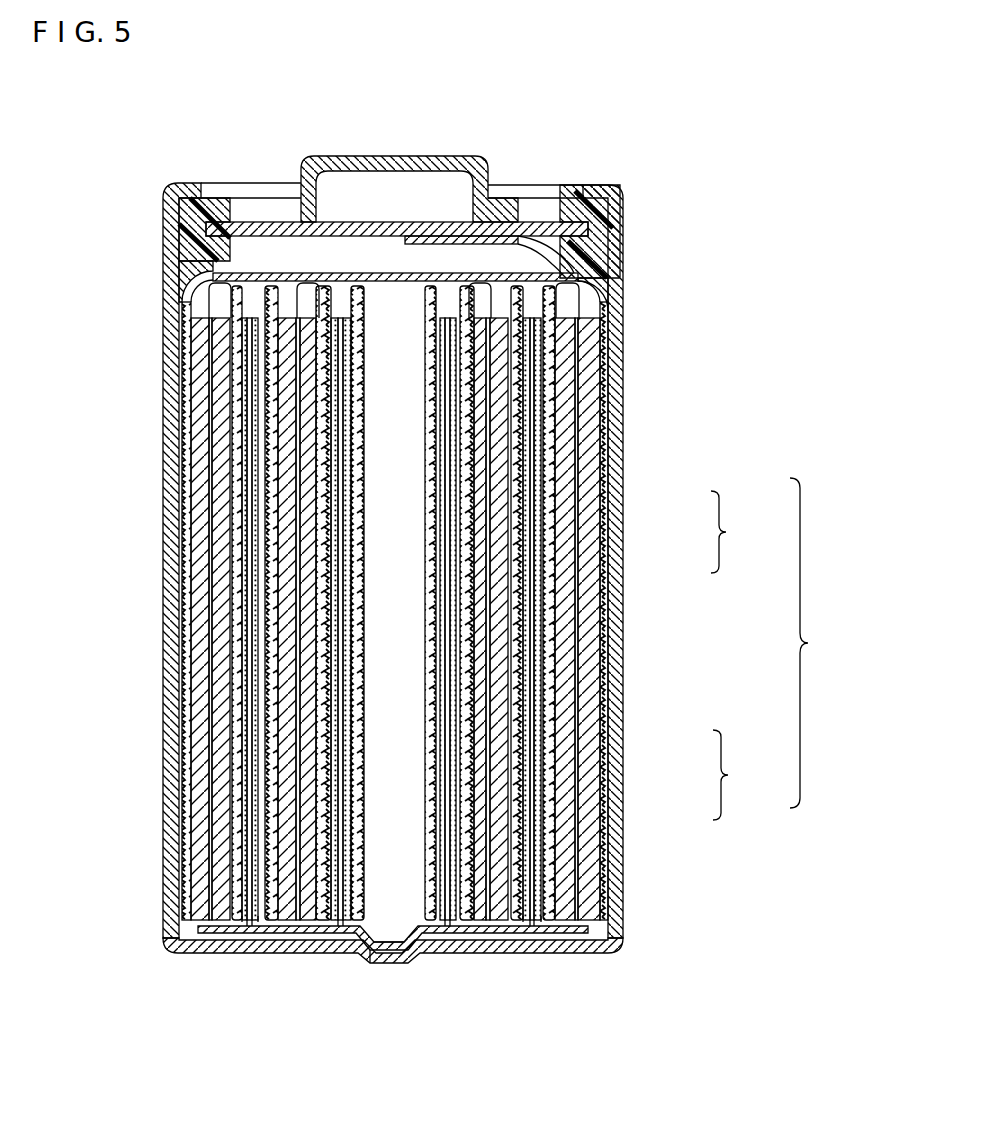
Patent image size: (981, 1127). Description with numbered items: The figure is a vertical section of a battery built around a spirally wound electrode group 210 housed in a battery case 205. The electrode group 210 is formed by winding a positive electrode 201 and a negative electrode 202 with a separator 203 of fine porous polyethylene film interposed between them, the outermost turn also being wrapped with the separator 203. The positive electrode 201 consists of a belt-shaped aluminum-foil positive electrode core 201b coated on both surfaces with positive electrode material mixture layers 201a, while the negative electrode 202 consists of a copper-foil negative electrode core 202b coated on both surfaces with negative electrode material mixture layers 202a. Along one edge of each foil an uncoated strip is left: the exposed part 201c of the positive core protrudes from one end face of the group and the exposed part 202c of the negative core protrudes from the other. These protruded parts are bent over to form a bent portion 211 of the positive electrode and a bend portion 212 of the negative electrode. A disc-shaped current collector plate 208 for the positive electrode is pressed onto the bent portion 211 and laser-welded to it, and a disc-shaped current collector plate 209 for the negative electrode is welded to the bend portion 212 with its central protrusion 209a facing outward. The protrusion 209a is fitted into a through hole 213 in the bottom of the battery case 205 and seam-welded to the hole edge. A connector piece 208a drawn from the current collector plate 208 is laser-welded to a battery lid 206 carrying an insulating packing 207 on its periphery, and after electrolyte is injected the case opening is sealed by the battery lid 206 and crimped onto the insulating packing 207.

The positive electrode 201 is at (741, 532).
The positive electrode material mixture layer 201a is at (570, 552).
The positive electrode core 201b is at (576, 508).
The exposed part of the positive electrode core 201c is at (185, 300).
The negative electrode 202 is at (743, 775).
The negative electrode material mixture layer 202a is at (527, 800).
The negative electrode core 202b is at (532, 748).
The exposed part of the negative electrode core 202c is at (236, 916).
The separator 203 is at (540, 680).
The battery case 205 is at (610, 430).
The battery lid 206 is at (372, 150).
The insulating packing 207 is at (606, 221).
The current collector plate for the positive electrode 208 is at (342, 265).
The connector piece 208a is at (426, 228).
The current collector plate for the negative electrode 209 is at (600, 919).
The protrusion 209a is at (389, 955).
The electrode group 210 is at (821, 643).
The bent portion of the positive electrode 211 is at (590, 145).
The bend portion of the negative electrode 212 is at (524, 918).
The through hole 213 is at (360, 952).